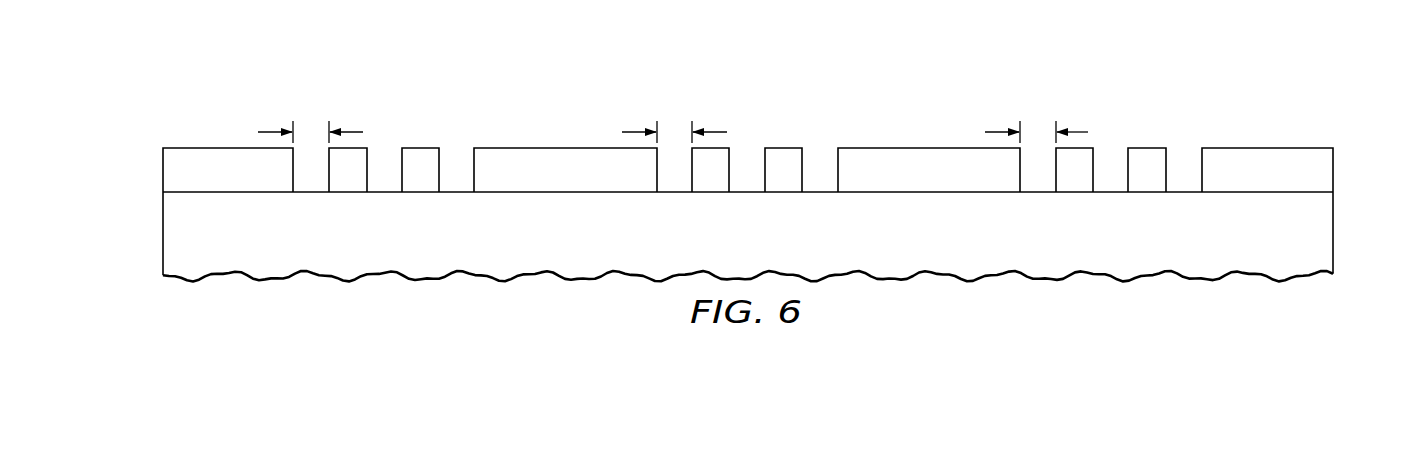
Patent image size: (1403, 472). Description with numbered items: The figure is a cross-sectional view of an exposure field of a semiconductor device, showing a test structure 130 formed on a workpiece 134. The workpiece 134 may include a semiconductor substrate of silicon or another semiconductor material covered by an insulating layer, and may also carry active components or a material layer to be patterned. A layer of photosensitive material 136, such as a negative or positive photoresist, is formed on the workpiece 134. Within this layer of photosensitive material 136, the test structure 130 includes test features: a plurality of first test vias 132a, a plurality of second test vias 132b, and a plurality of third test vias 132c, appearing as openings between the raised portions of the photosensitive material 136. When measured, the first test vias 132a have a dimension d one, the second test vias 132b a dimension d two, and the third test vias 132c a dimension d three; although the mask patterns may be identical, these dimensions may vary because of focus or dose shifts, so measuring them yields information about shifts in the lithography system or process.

The test structure 130 is at (779, 146).
The first test vias 132a is at (367, 114).
The second test vias 132b is at (730, 114).
The third test vias 132c is at (1128, 114).
The workpiece 134 is at (1333, 225).
The layer of photosensitive material 136 is at (1333, 168).